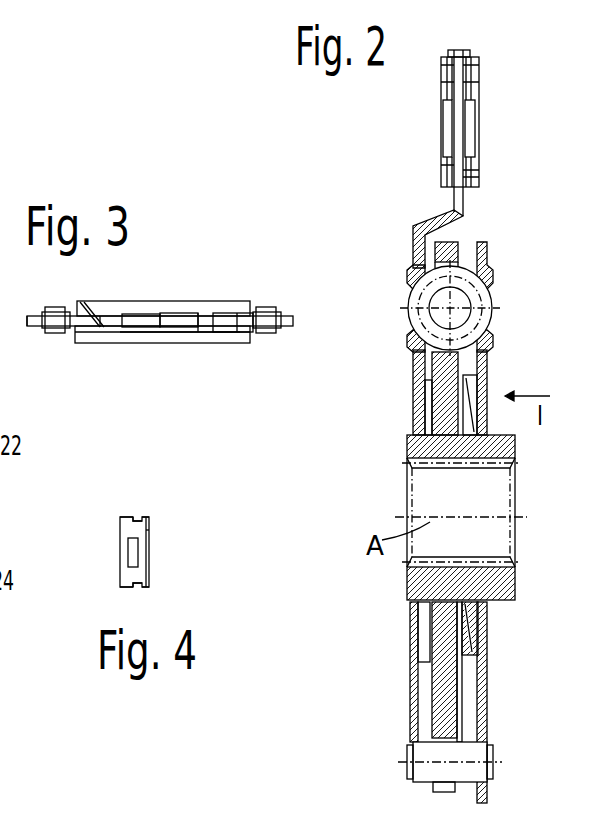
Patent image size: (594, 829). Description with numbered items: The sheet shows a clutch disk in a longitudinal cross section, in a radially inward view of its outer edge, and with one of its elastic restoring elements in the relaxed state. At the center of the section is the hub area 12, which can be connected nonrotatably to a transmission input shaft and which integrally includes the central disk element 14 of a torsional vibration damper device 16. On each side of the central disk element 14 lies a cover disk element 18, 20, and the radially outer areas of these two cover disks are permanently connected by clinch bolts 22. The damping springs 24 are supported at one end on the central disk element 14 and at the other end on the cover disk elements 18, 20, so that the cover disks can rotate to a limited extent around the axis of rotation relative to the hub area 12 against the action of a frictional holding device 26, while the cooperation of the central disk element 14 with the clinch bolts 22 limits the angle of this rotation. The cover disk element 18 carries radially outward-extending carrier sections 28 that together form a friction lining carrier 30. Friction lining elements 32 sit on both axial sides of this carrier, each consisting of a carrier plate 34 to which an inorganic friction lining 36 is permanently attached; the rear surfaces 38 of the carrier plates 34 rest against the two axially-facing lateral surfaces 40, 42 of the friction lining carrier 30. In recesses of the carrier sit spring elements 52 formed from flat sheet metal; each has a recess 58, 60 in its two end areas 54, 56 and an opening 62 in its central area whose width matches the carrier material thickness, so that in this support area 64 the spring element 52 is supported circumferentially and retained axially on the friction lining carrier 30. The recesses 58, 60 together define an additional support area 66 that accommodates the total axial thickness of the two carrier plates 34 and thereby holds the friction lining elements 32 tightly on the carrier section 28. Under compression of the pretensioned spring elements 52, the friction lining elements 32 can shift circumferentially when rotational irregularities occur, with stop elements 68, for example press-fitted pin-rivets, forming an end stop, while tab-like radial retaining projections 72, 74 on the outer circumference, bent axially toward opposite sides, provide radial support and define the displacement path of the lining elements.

In FIG. 2, the hub area 12 is at (410, 448).
In FIG. 2, the central disk element 14 is at (438, 386).
In FIG. 2, the torsional vibration damper device 16 is at (510, 261).
In FIG. 2, the cover disk element 18 is at (412, 673).
In FIG. 2, the cover disk element 20 is at (488, 695).
In FIG. 2, the clinch bolts 22 is at (458, 742).
In FIG. 2, the damping springs 24 is at (494, 307).
In FIG. 2, the frictional holding device 26 is at (485, 660).
In FIG. 2, the carrier section 28 is at (464, 203).
In FIG. 2, the friction lining carrier 30 is at (428, 209).
In FIG. 2, the friction lining elements 32 is at (444, 54).
In FIG. 3, the friction lining elements 32 is at (221, 300).
In FIG. 2, the carrier plate 34 is at (448, 162).
In FIG. 3, the carrier plate 34 is at (108, 328).
In FIG. 2, the friction lining 36 is at (442, 90).
In FIG. 3, the friction lining 36 is at (150, 343).
In FIG. 3, the rear surfaces 38 is at (86, 310).
In FIG. 3, the lateral surface 40 is at (28, 318).
In FIG. 3, the lateral surface 42 is at (27, 330).
In FIG. 2, the spring element 52 is at (470, 130).
In FIG. 4, the spring element 52 is at (149, 568).
In FIG. 4, the end area 54 is at (150, 520).
In FIG. 4, the end area 56 is at (150, 586).
In FIG. 4, the recess 58 is at (132, 517).
In FIG. 4, the recess 60 is at (133, 586).
In FIG. 3, the opening 62 is at (265, 308).
In FIG. 4, the opening 62 is at (128, 548).
In FIG. 4, the support area 64 is at (150, 545).
In FIG. 4, the additional support area 66 is at (147, 498).
In FIG. 2, the stop elements 68 is at (476, 160).
In FIG. 3, the stop elements 68 is at (46, 307).
In FIG. 2, the radial retaining projections 72 is at (470, 52).
In FIG. 3, the radial retaining projections 72 is at (135, 327).
In FIG. 2, the radial retaining projections 74 is at (456, 51).
In FIG. 3, the radial retaining projections 74 is at (98, 318).